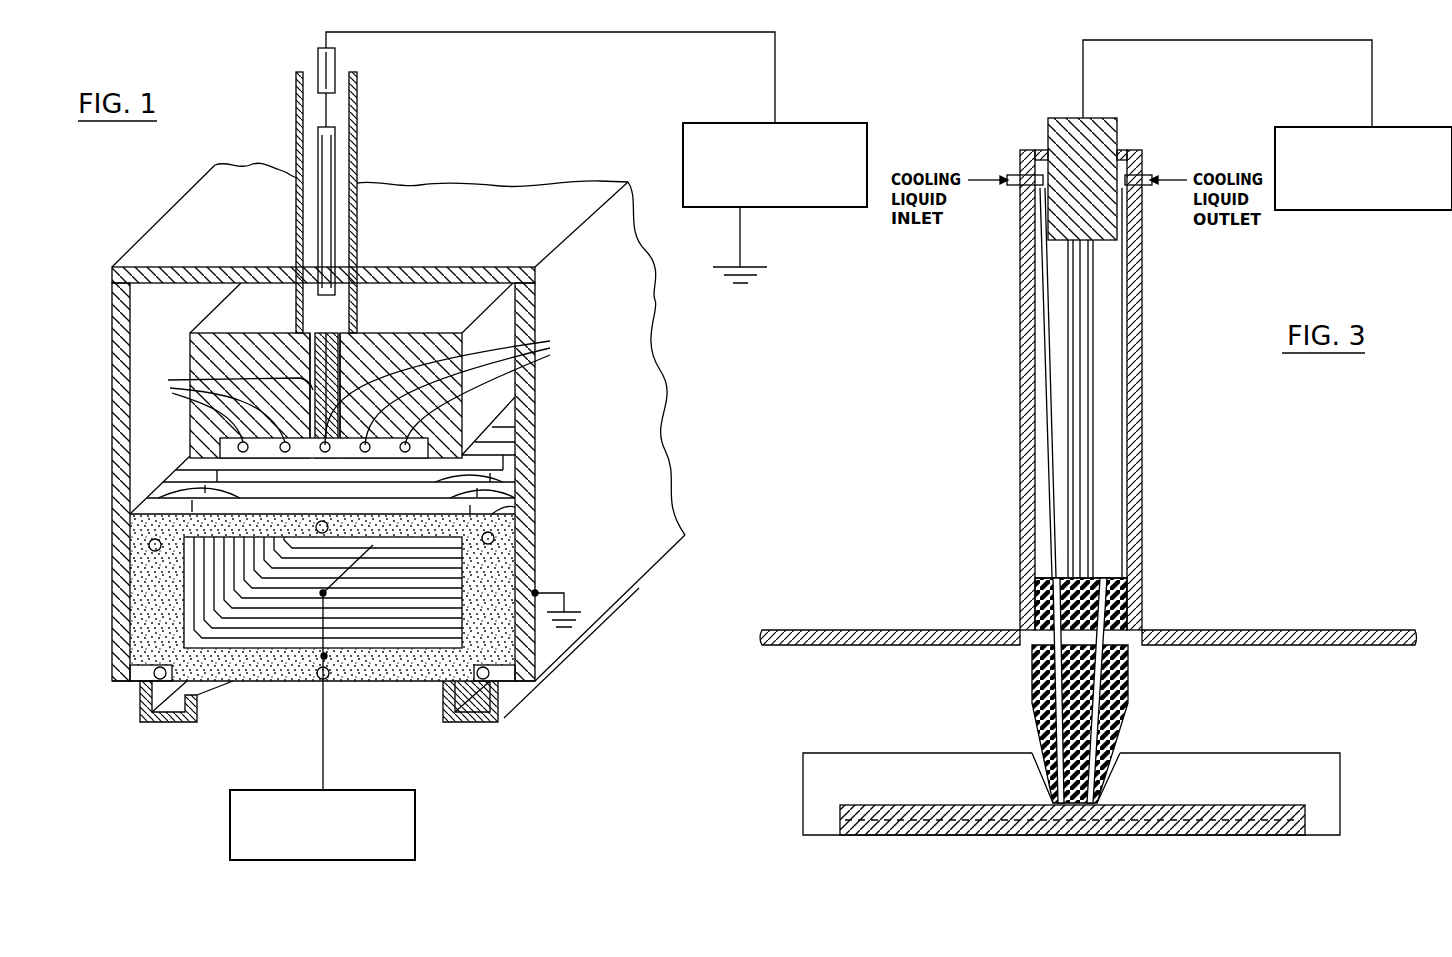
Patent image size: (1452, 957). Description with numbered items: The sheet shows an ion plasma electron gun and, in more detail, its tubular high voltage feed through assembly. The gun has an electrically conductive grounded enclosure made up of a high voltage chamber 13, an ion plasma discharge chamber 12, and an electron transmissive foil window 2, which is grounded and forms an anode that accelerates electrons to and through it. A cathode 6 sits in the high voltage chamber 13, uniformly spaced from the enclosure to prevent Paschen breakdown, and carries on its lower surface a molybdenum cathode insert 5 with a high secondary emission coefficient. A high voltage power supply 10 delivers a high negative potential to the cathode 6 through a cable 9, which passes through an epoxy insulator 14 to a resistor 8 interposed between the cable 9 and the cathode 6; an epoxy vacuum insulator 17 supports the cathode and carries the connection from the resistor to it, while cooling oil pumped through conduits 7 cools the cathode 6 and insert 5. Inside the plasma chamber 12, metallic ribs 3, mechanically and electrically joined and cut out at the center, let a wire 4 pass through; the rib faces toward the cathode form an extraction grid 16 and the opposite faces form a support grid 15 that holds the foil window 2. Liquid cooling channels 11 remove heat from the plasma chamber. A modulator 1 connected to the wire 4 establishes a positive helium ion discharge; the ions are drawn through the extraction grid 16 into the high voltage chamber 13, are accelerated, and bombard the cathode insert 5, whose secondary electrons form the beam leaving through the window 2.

In FIG. 1, the modulator 1 is at (343, 848).
In FIG. 1, the electron transmissive foil window 2 is at (283, 682).
In FIG. 1, the metallic ribs 3 is at (515, 497).
In FIG. 1, the wire 4 is at (363, 563).
In FIG. 1, the cathode insert 5 is at (220, 450).
In FIG. 3, the cathode insert 5 is at (1093, 837).
In FIG. 1, the cathode 6 is at (492, 402).
In FIG. 3, the cathode 6 is at (902, 767).
In FIG. 1, the conduits 7 is at (359, 391).
In FIG. 3, the conduits 7 is at (1053, 688).
In FIG. 1, the resistor 8 is at (332, 192).
In FIG. 3, the resistor 8 is at (1080, 377).
In FIG. 1, the cable 9 is at (630, 36).
In FIG. 3, the cable 9 is at (1268, 42).
In FIG. 1, the high voltage power supply 10 is at (858, 145).
In FIG. 3, the high voltage power supply 10 is at (1397, 130).
In FIG. 1, the liquid cooling channels 11 is at (316, 529).
In FIG. 1, the ion plasma discharge chamber 12 is at (376, 610).
In FIG. 1, the high voltage chamber 13 is at (112, 332).
In FIG. 1, the epoxy insulator 14 is at (318, 60).
In FIG. 3, the epoxy insulator 14 is at (1060, 125).
In FIG. 1, the support grid 15 is at (252, 670).
In FIG. 1, the extraction grid 16 is at (137, 510).
In FIG. 3, the epoxy vacuum insulator 17 is at (1075, 680).